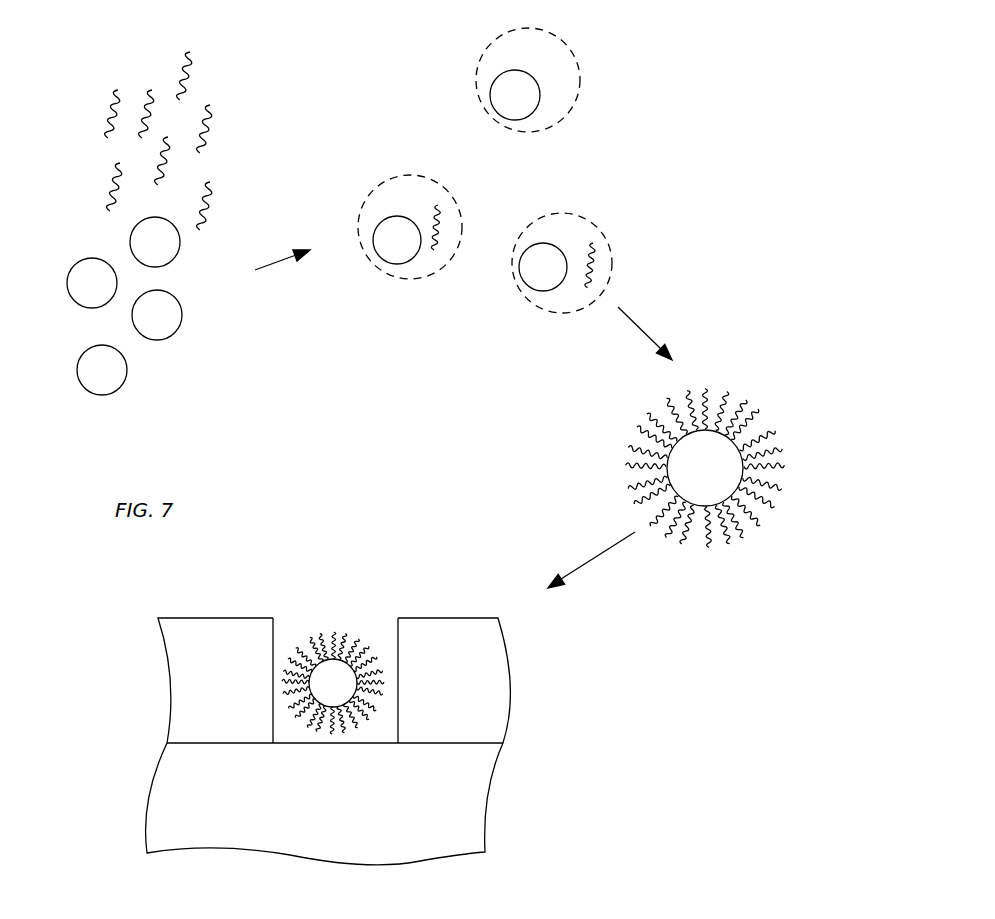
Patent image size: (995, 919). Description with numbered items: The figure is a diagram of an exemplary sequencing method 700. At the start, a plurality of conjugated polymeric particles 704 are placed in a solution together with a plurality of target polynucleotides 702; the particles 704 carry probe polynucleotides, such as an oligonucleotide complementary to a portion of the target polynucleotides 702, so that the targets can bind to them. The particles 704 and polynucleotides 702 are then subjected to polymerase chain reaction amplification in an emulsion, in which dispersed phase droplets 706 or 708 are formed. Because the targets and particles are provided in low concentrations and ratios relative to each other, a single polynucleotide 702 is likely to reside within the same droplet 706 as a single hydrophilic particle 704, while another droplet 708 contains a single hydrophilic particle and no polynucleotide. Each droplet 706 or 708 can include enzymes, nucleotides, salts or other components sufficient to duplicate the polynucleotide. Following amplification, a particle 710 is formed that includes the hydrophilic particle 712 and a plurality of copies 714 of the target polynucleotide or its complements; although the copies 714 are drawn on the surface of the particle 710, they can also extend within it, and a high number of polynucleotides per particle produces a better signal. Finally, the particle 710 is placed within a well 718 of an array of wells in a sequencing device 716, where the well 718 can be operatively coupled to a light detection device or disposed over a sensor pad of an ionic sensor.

The sequencing method 700 is at (723, 66).
The target polynucleotides 702 is at (107, 100).
The conjugated polymeric particles 704 is at (185, 348).
The dispersed phase droplet 706 is at (383, 182).
The dispersed phase droplet 708 is at (580, 65).
The particle 710 is at (553, 536).
The hydrophilic particle 712 is at (715, 460).
The copies of the target polynucleotide 714 is at (617, 473).
The sequencing device 716 is at (510, 736).
The well 718 is at (378, 624).